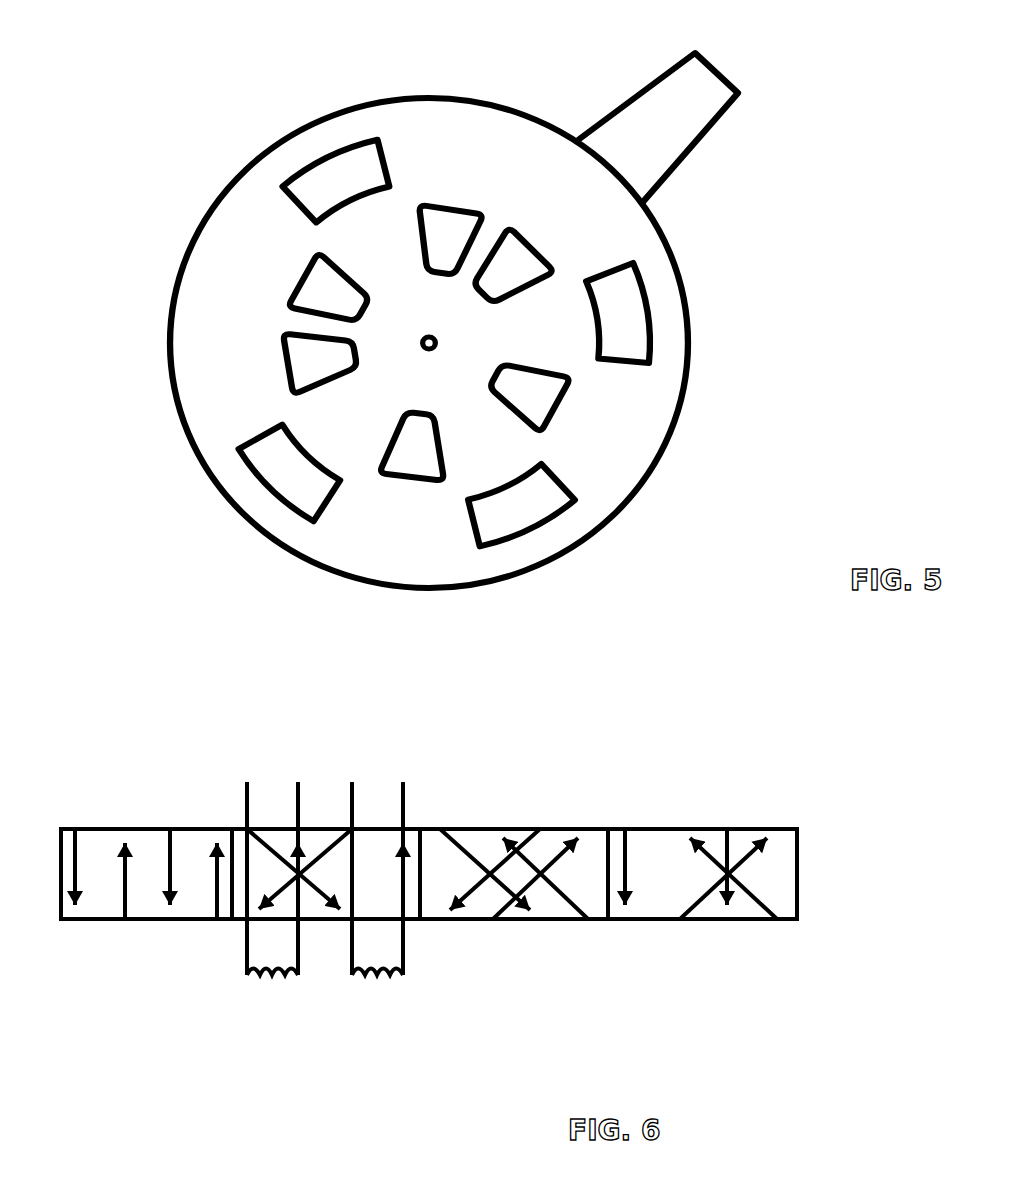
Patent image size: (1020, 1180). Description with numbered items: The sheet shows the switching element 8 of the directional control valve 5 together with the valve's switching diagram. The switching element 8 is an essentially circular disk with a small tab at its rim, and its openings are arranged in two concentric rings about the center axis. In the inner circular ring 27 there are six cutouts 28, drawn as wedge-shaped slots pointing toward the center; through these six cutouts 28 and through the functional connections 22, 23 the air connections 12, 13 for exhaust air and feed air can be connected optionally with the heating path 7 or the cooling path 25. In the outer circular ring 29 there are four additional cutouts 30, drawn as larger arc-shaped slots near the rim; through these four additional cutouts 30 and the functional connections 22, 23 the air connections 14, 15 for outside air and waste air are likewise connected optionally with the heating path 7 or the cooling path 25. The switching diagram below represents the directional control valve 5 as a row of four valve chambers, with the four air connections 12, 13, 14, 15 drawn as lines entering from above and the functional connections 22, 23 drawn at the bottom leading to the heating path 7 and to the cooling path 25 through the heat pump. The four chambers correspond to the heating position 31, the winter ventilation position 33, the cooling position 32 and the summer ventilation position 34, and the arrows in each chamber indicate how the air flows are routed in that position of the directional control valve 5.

In FIG. 5, the switching element 8 is at (220, 122).
In FIG. 5, the inner circular ring 27 is at (514, 167).
In FIG. 5, the cutouts 28 is at (445, 226).
In FIG. 5, the outer circular ring 29 is at (279, 525).
In FIG. 5, the additional cutouts 30 is at (330, 152).
In FIG. 6, the directional control valve 5 is at (741, 714).
In FIG. 6, the heating position 31 is at (153, 833).
In FIG. 6, the cooling position 32 is at (493, 833).
In FIG. 6, the winter ventilation position 33 is at (426, 790).
In FIG. 6, the summer ventilation position 34 is at (672, 833).
In FIG. 6, the air connection 12 is at (352, 782).
In FIG. 6, the air connection 13 is at (403, 782).
In FIG. 6, the air connection 14 is at (248, 782).
In FIG. 6, the air connection 15 is at (298, 782).
In FIG. 6, the functional connections 22 is at (402, 955).
In FIG. 6, the functional connections 23 is at (247, 950).
In FIG. 6, the cooling path 25 is at (245, 1010).
In FIG. 6, the heating path 7 is at (371, 1010).